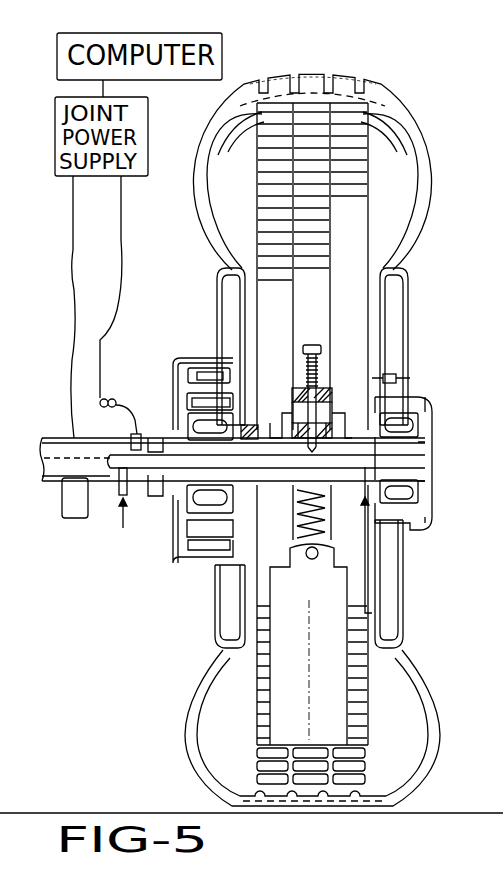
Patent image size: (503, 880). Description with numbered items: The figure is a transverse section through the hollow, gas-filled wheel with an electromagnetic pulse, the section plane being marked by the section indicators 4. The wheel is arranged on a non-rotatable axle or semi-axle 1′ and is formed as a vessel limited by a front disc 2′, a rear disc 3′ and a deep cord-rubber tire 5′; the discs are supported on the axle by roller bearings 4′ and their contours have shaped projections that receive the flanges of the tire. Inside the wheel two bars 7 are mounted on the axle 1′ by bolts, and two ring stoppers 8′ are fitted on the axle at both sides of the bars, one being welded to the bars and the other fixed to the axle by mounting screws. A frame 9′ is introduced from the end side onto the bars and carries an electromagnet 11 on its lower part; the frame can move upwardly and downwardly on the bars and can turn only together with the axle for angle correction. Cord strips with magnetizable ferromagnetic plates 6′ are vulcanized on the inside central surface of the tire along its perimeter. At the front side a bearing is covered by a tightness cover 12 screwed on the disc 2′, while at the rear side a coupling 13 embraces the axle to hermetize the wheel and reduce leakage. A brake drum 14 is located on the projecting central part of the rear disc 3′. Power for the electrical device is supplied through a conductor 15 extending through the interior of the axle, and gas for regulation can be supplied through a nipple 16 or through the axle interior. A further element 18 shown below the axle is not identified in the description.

The axle or semi-axle 1′ is at (117, 472).
The front disc 2′ is at (378, 572).
The rear disc 3′ is at (232, 610).
The section line 4- 4 is at (270, 57).
The roller bearings 4′ is at (190, 505).
The deep cord-rubber tire 5′ is at (196, 173).
The magnetizable ferromagnetic plates 6′ is at (372, 152).
The bars 7 is at (330, 415).
The ring stoppers 8′ is at (293, 492).
The frame 9′ is at (320, 390).
The electromagnet 11 is at (324, 683).
The air tightness cover 12 is at (432, 402).
The coupling 13 is at (251, 425).
The brake drum 14 is at (193, 357).
The conductor 15 is at (120, 313).
The nipple 16 is at (398, 380).
The rotary joint 18 is at (75, 498).